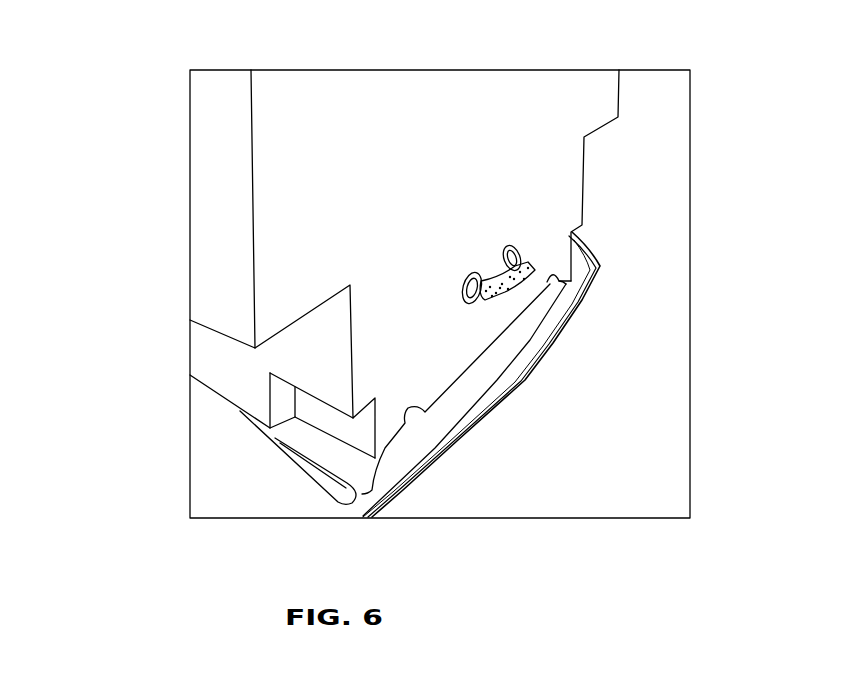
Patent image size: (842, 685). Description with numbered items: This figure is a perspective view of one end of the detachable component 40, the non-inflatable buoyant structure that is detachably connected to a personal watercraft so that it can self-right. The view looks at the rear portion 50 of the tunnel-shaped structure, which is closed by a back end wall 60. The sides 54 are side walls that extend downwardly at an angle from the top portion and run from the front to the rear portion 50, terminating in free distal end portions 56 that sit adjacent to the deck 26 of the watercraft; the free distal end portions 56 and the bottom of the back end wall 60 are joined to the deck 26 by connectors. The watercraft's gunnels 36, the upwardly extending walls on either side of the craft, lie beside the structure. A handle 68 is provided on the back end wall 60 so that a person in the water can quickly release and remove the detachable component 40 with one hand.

The detachable component 40 is at (617, 57).
The sides 54 is at (222, 153).
The rear portion 50 is at (525, 145).
The back end wall 60 is at (374, 185).
The gunnels 36 is at (235, 467).
The free distal end portions 56 is at (388, 420).
The deck 26 is at (480, 386).
The handle 68 is at (556, 278).